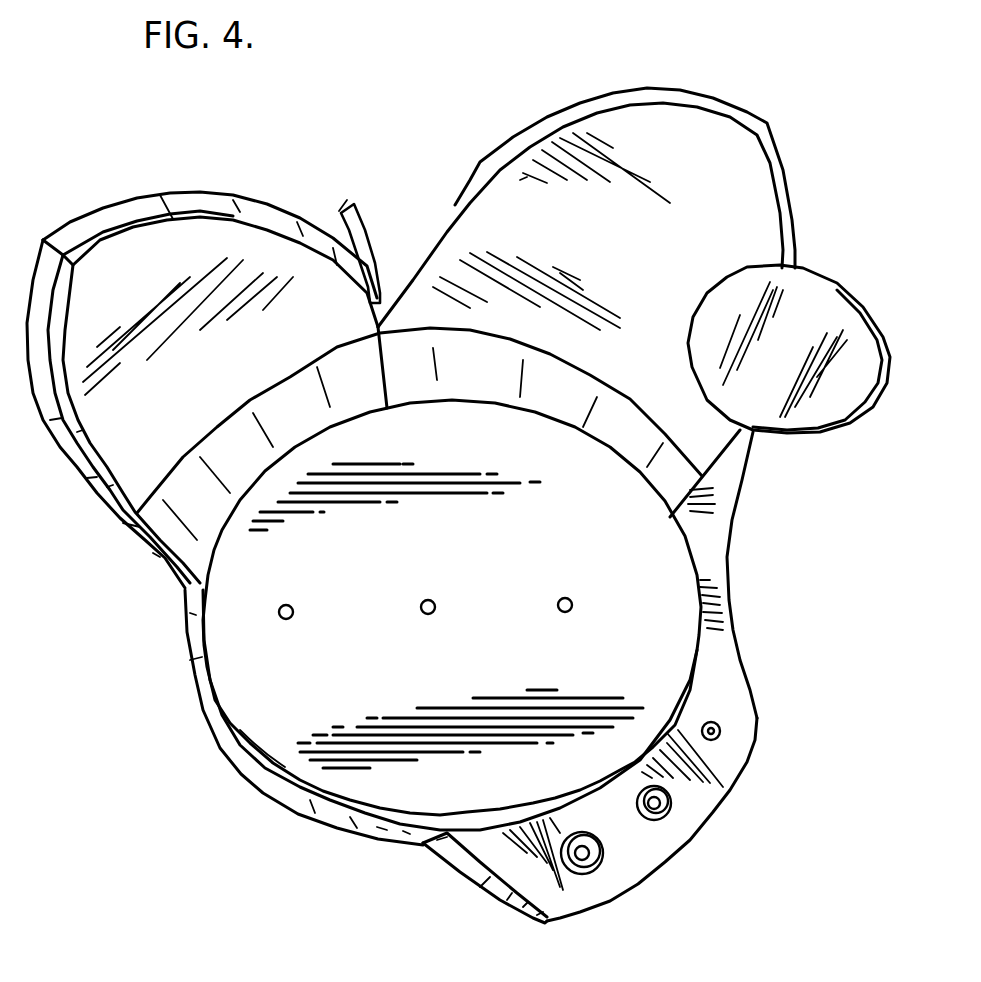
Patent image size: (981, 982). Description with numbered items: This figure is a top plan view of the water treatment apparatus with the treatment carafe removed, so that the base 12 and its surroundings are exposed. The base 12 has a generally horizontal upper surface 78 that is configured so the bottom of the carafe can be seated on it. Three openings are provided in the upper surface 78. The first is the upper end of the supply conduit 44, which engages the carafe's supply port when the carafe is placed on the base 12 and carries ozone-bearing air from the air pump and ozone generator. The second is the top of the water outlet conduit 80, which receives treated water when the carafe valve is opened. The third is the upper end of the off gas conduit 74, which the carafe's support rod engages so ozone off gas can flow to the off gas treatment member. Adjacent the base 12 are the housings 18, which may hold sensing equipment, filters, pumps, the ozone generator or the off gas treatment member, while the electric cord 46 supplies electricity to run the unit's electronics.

The base 12 is at (275, 782).
The housing 18 is at (273, 260).
The supply conduit 44 is at (567, 613).
The electric cord 46 is at (370, 227).
The off gas conduit 74 is at (429, 615).
The upper surface 78 is at (668, 670).
The water outlet conduit 80 is at (287, 605).